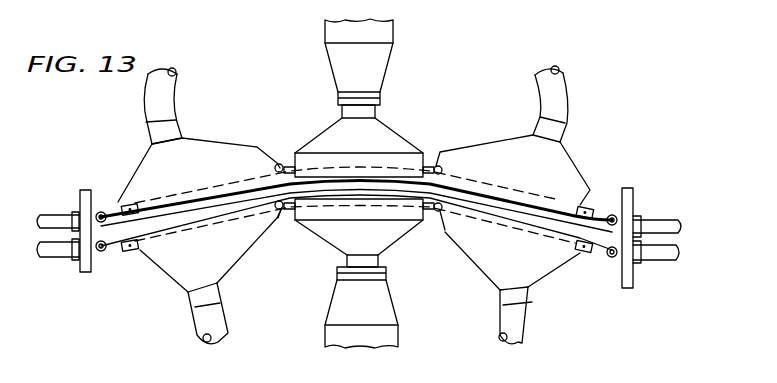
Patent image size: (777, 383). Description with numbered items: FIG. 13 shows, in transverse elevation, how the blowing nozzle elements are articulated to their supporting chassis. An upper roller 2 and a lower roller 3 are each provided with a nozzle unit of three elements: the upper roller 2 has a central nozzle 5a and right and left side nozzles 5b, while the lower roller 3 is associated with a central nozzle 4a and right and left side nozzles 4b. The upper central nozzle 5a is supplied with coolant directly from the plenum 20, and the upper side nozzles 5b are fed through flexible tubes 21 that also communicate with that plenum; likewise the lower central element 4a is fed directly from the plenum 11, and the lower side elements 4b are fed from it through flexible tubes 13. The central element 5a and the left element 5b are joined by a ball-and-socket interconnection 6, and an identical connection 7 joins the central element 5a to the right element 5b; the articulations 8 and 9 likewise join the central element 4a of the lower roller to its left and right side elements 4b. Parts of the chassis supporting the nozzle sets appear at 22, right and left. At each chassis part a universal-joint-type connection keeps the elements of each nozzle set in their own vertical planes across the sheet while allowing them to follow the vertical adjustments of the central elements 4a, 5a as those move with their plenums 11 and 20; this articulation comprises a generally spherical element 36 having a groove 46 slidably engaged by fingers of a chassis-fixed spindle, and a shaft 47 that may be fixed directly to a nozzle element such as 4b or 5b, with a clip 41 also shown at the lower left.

The upper roller 2 is at (676, 227).
The lower roller 3 is at (680, 256).
The central nozzle 4a is at (333, 237).
The side nozzles 4b is at (498, 258).
The central nozzle 5a is at (402, 148).
The side nozzles 5b is at (217, 153).
The interconnection 6 is at (280, 163).
The ball-and-socket connection 7 is at (437, 165).
The articulation 8 is at (282, 215).
The articulation 9 is at (430, 217).
The plenum 11 is at (380, 313).
The flexible tubes 13 is at (200, 323).
The plenum 20 is at (337, 58).
The flexible tubes 21 is at (167, 97).
The chassis parts 22 is at (82, 200).
The spherical element 36 is at (100, 212).
The clip 41 is at (127, 252).
The groove 46 is at (216, 258).
The second shaft 47 is at (125, 205).